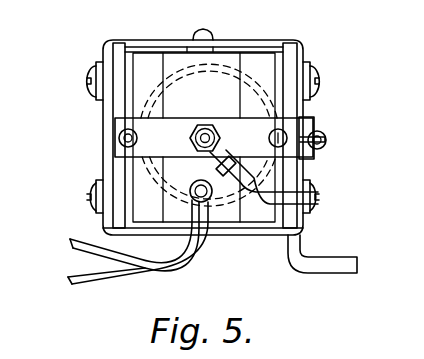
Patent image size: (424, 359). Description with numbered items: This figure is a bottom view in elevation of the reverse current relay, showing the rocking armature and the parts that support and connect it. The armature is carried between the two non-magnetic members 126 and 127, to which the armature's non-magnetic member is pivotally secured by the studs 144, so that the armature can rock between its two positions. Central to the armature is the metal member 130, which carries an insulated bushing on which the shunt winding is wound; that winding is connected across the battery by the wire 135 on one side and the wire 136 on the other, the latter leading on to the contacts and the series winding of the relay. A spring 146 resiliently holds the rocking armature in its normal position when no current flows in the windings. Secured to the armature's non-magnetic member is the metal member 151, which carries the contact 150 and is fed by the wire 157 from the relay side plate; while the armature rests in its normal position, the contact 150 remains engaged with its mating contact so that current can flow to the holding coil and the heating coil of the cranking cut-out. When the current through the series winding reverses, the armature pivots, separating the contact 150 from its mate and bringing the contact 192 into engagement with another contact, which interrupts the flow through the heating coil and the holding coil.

The non-magnetic member 126 is at (262, 43).
The studs 144 is at (209, 33).
The non-magnetic member 127 is at (249, 236).
The metal member 130 is at (213, 127).
The contact 150 is at (119, 138).
The metal member 151 is at (294, 127).
The contact 192 is at (320, 132).
The spring 146 is at (325, 143).
The wire 157 is at (258, 200).
The wire 136 is at (78, 248).
The wire 135 is at (90, 283).